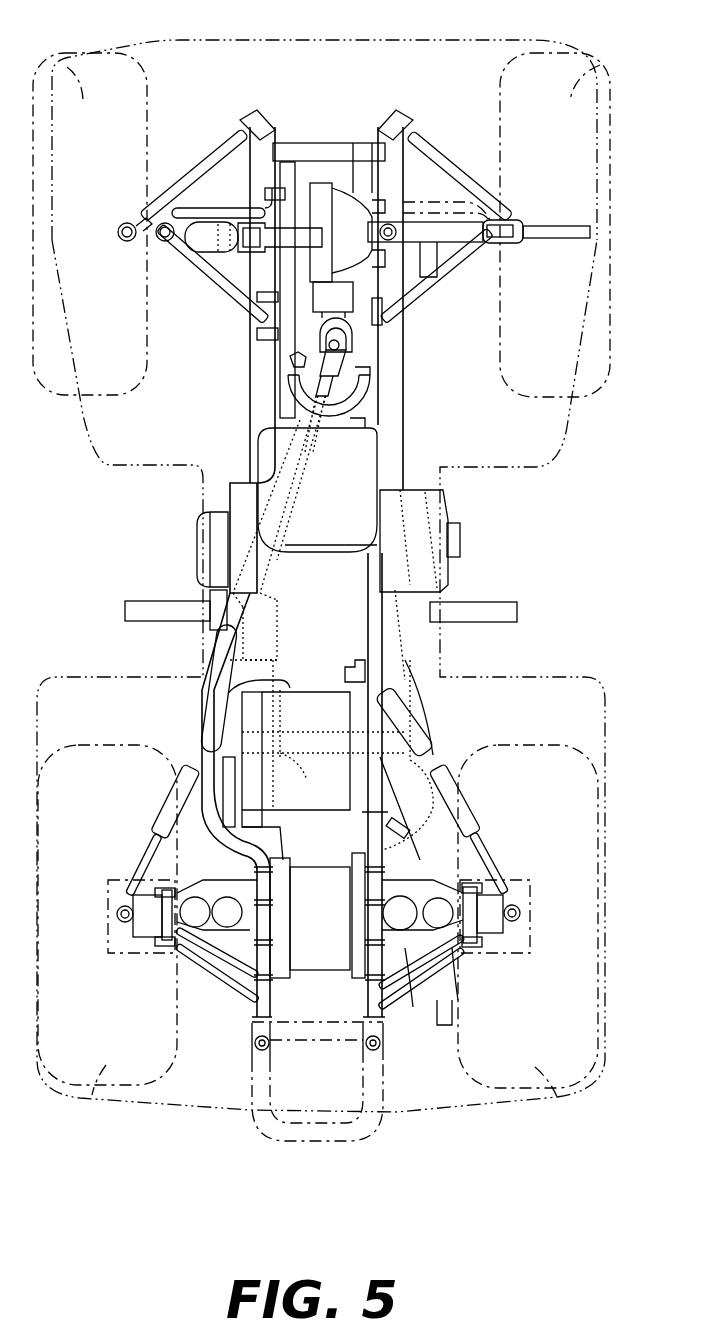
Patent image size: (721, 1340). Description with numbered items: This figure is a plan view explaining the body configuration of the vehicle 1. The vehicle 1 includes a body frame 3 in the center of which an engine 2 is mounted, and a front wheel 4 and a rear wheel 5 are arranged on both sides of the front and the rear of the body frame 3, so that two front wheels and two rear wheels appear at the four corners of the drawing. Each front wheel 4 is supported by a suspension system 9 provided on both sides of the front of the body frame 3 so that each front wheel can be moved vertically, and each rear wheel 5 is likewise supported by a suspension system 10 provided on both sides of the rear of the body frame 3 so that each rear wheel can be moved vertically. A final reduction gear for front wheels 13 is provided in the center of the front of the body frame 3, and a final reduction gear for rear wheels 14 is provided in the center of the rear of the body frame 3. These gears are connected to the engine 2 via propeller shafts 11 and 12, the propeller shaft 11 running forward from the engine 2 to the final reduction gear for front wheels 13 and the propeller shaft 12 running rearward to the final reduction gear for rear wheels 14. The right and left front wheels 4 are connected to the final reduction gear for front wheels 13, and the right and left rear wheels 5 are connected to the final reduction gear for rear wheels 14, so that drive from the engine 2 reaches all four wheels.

The vehicle 1 is at (455, 525).
The engine 2 is at (205, 510).
The body frame 3 is at (368, 676).
The front wheel 4 is at (55, 58).
The rear wheel 5 is at (80, 1100).
The suspension system 9 is at (226, 268).
The suspension system 10 is at (207, 943).
The propeller shaft 11 is at (305, 362).
The propeller shaft 12 is at (289, 770).
The final reduction gear for front wheels 13 is at (322, 200).
The final reduction gear for rear wheels 14 is at (303, 927).